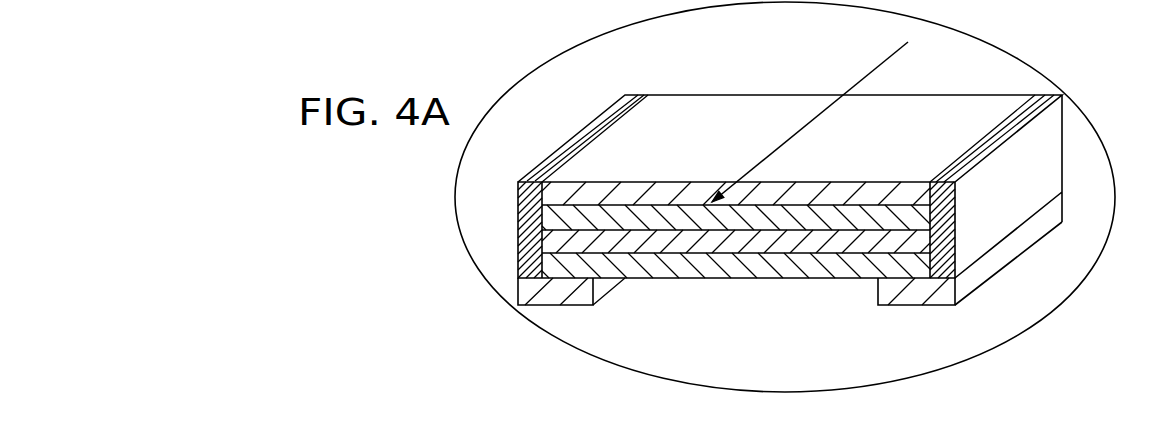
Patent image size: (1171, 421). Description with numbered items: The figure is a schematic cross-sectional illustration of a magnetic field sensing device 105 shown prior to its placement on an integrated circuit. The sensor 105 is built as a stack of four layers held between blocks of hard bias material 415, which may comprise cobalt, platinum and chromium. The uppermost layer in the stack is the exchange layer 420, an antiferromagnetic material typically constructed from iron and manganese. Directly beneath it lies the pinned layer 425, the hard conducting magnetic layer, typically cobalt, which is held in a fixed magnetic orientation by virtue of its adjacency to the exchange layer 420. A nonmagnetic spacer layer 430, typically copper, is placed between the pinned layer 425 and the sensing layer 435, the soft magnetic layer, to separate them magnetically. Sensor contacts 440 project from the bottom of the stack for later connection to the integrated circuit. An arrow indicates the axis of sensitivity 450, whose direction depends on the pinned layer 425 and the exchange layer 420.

The magnetic field sensing device 105 is at (543, 66).
The hard bias material 415 is at (518, 224).
The exchange layer 420 is at (708, 198).
The pinned layer 425 is at (715, 218).
The spacer layer 430 is at (770, 241).
The sensing layer 435 is at (826, 265).
The sensor contacts 440 is at (573, 300).
The axis of sensitivity 450 is at (810, 123).